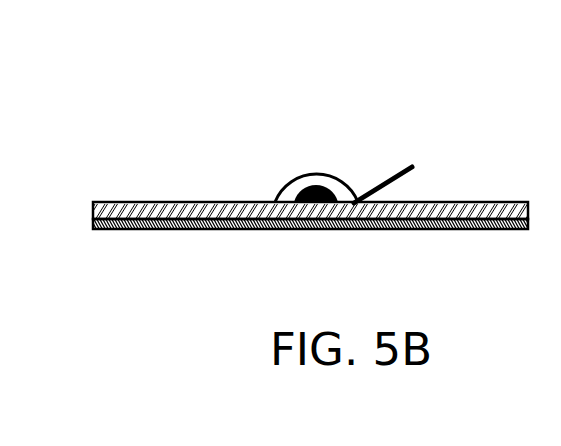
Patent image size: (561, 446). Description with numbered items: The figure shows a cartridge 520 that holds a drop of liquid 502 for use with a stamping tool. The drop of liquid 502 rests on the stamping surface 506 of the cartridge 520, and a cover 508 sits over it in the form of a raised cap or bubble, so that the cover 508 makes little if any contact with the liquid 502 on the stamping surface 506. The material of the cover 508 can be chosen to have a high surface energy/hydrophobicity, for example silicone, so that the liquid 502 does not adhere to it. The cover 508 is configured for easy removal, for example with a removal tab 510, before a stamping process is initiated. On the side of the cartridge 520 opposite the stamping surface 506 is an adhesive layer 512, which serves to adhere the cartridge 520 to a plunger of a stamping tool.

The drop of liquid 502 is at (331, 216).
The stamping surface 506 is at (164, 182).
The cover 508 is at (332, 177).
The removal tab 510 is at (402, 176).
The adhesive layer 512 is at (115, 256).
The cartridge 520 is at (249, 67).